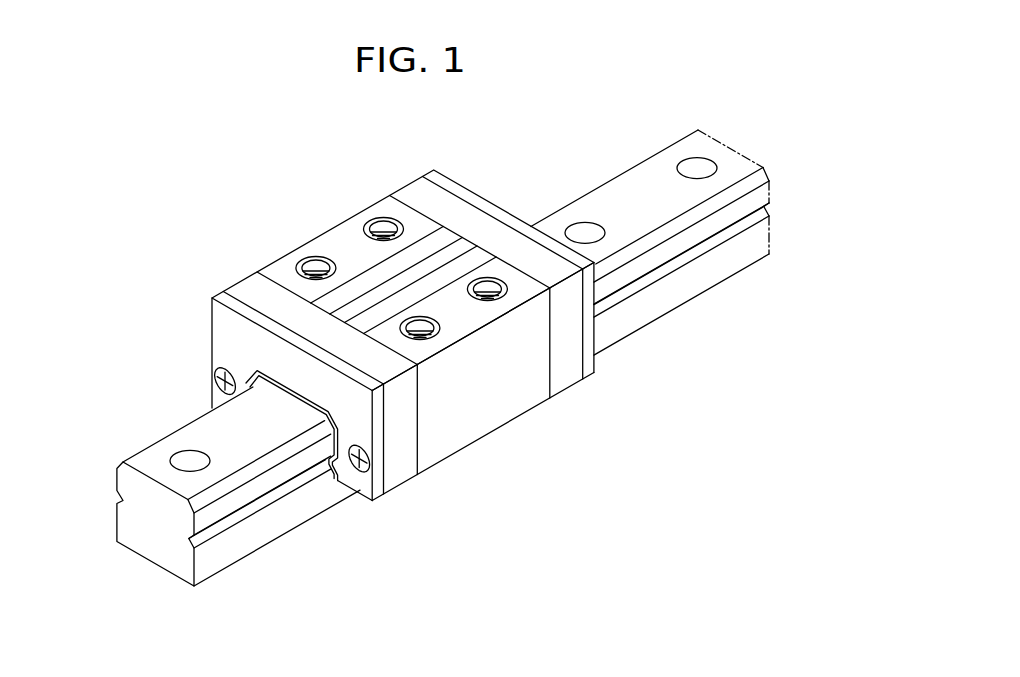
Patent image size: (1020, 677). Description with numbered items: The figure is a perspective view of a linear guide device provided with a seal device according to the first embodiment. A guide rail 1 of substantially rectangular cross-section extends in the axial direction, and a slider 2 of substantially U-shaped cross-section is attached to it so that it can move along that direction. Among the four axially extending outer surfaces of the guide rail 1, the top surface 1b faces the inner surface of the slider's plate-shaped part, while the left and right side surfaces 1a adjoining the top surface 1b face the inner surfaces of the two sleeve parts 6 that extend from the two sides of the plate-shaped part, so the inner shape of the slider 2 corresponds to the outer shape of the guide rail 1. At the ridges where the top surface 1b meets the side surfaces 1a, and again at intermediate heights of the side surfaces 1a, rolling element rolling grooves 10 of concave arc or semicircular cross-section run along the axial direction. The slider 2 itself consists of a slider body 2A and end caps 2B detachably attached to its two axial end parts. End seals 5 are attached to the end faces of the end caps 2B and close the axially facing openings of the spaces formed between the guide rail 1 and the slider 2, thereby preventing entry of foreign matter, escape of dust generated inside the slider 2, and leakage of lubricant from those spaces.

The guide rail 1 is at (414, 379).
The side surface 1a is at (116, 518).
The top surface 1b is at (207, 430).
The rolling element rolling groove 10 is at (121, 466).
The slider 2 is at (382, 311).
The slider body 2A is at (352, 233).
The end cap 2B is at (420, 192).
The end seal 5 is at (452, 187).
The sleeve part 6 is at (493, 387).